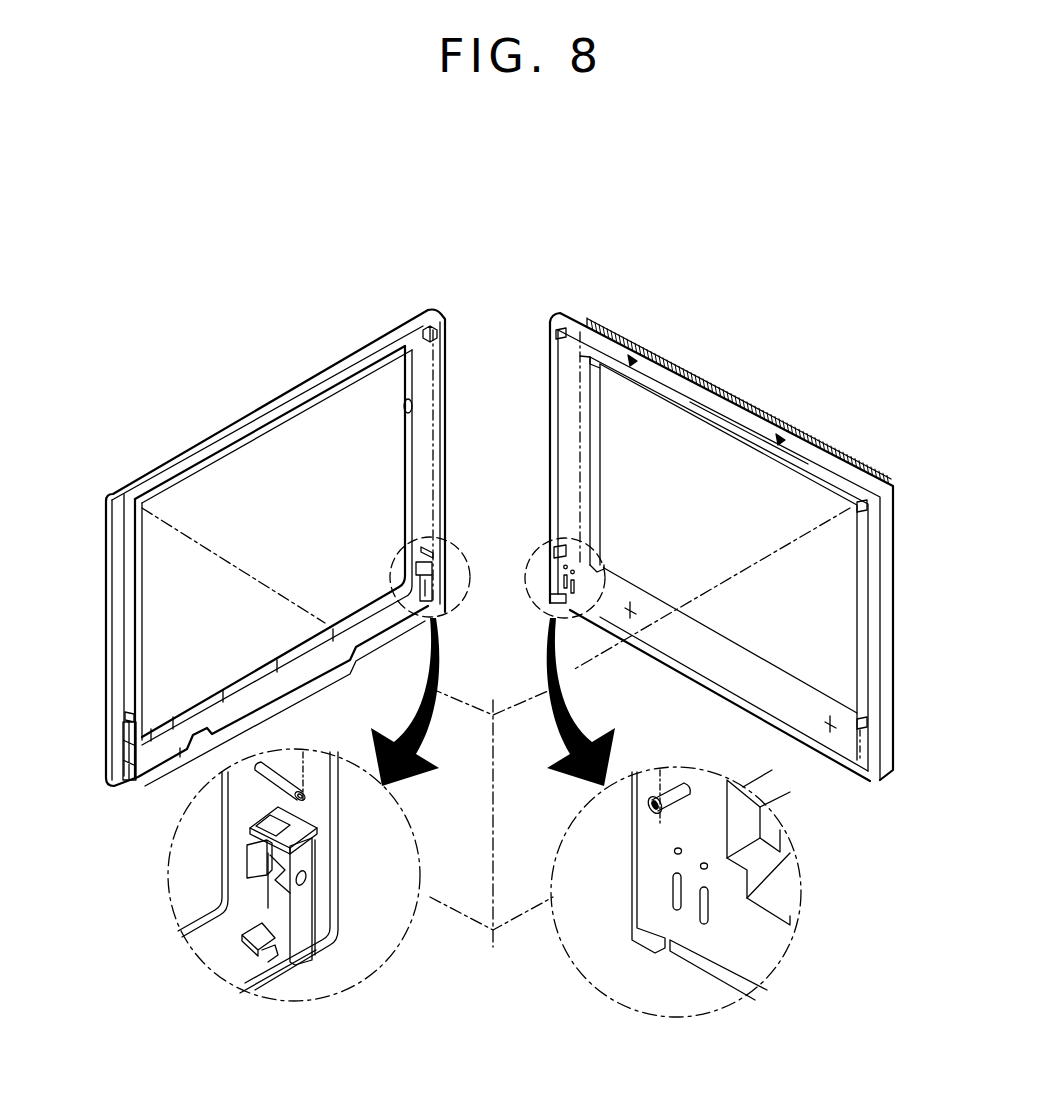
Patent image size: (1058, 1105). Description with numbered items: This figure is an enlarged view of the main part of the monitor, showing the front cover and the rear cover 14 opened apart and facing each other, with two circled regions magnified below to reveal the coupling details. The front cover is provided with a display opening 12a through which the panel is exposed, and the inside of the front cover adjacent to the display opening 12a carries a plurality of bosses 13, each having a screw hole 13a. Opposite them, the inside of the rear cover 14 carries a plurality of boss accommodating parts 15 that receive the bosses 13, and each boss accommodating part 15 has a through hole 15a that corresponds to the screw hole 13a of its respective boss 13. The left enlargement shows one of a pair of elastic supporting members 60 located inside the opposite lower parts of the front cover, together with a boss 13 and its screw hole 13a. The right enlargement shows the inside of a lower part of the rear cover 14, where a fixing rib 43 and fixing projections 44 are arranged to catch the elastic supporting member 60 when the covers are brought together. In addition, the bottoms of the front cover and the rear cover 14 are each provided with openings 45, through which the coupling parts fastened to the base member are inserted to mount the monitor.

The display opening 12a is at (409, 398).
The boss 13 is at (434, 338).
The screw hole 13a is at (312, 812).
The rear cover 14 is at (105, 616).
The boss accommodating part 15 is at (555, 552).
The through hole 15a is at (674, 850).
The fixing rib 43 is at (630, 945).
The fixing projection 44 is at (670, 874).
The opening 45 is at (283, 938).
The elastic supporting member 60 is at (306, 898).